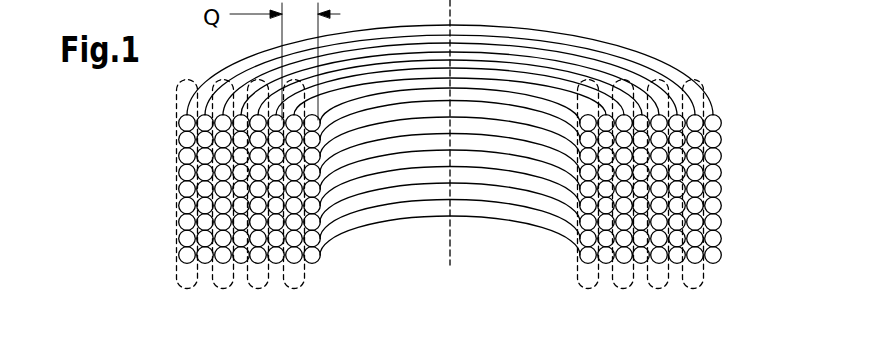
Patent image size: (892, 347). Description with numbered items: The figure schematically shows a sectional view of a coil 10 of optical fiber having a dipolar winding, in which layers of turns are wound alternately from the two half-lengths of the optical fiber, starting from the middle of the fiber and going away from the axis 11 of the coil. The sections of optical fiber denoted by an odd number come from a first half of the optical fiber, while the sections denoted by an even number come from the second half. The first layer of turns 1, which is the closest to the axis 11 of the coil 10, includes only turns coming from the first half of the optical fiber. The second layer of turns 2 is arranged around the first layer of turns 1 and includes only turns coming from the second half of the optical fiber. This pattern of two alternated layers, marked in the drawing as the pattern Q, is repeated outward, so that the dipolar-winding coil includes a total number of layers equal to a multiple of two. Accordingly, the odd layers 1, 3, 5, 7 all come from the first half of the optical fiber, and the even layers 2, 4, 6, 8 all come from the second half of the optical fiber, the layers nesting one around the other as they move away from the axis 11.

The first layer of turns 1 is at (578, 274).
The second layer of turns 2 is at (293, 289).
The odd layer 3 is at (621, 289).
The even layer 4 is at (256, 289).
The odd layer 5 is at (656, 289).
The even layer 6 is at (222, 289).
The odd layer 7 is at (702, 275).
The even layer 8 is at (186, 288).
The coil 10 is at (752, 184).
The axis 11 is at (450, 262).